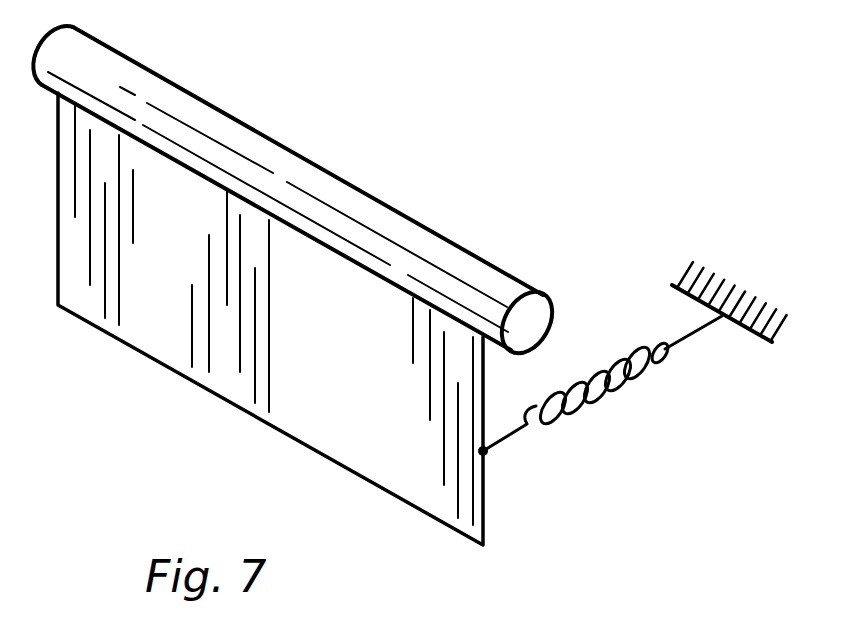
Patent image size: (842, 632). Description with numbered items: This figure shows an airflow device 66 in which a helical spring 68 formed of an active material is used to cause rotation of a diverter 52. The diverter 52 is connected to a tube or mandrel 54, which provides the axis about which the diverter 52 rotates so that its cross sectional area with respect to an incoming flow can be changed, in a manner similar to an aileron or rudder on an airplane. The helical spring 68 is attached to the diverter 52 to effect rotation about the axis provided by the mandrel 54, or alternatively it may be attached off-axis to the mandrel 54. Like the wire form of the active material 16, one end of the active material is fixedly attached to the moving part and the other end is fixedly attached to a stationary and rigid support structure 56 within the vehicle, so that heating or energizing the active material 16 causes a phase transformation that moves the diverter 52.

The active material 16 is at (680, 338).
The diverter 52 is at (184, 353).
The tube 54 is at (378, 212).
The support structure 56 is at (748, 333).
The airflow device 66 is at (306, 283).
The helical spring 68 is at (618, 420).